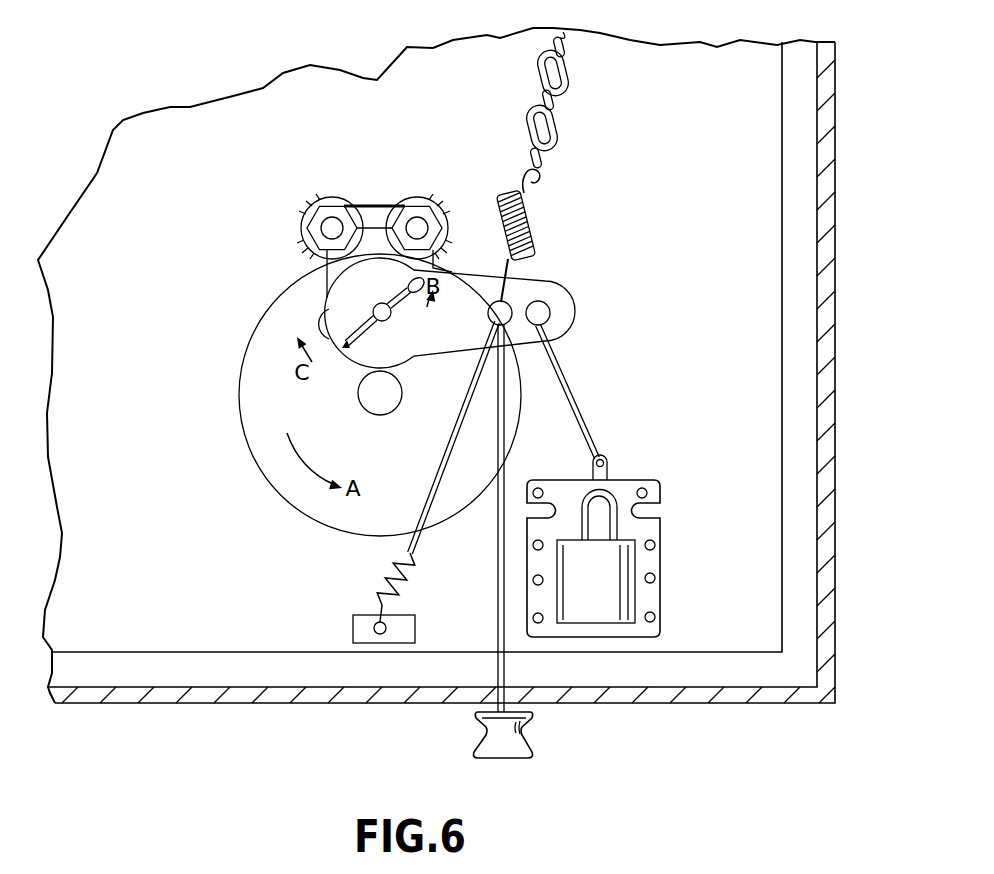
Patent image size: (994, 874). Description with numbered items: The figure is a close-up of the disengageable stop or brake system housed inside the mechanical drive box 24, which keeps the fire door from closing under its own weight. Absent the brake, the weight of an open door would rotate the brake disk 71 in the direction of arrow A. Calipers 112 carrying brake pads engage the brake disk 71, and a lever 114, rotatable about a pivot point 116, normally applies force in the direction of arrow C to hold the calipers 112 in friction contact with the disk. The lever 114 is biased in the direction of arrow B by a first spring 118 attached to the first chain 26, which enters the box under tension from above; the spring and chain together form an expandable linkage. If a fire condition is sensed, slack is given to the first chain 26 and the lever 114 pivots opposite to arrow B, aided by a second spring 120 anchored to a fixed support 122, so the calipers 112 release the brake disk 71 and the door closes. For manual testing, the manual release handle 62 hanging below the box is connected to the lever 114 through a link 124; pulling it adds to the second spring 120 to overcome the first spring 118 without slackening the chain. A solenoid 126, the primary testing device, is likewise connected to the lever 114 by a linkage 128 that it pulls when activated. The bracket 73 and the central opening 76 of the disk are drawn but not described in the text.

The mechanical drive box 24 is at (838, 346).
The first chain 26 is at (570, 82).
The manual release handle 62 is at (530, 750).
The brake disk 71 is at (262, 385).
The mounting bracket 73 is at (326, 182).
The center shaft hole 76 is at (387, 408).
The calipers 112 is at (320, 257).
The lever 114 is at (572, 283).
The pivot point 116 is at (374, 306).
The first spring 118 is at (532, 220).
The second spring 120 is at (398, 558).
The fixed support 122 is at (353, 632).
The link 124 is at (498, 583).
The solenoid 126 is at (663, 547).
The linkage 128 is at (580, 413).